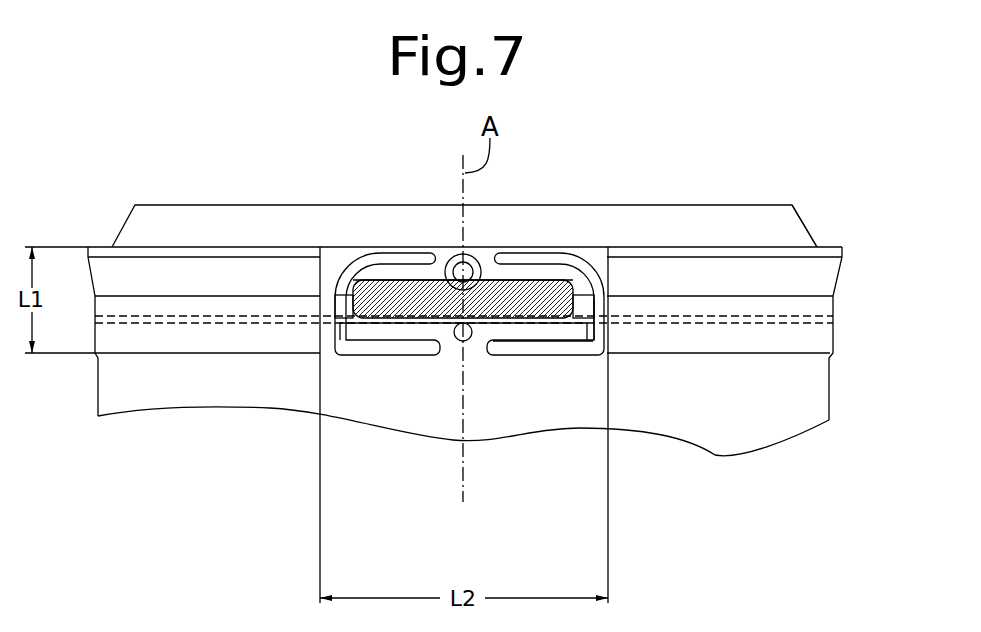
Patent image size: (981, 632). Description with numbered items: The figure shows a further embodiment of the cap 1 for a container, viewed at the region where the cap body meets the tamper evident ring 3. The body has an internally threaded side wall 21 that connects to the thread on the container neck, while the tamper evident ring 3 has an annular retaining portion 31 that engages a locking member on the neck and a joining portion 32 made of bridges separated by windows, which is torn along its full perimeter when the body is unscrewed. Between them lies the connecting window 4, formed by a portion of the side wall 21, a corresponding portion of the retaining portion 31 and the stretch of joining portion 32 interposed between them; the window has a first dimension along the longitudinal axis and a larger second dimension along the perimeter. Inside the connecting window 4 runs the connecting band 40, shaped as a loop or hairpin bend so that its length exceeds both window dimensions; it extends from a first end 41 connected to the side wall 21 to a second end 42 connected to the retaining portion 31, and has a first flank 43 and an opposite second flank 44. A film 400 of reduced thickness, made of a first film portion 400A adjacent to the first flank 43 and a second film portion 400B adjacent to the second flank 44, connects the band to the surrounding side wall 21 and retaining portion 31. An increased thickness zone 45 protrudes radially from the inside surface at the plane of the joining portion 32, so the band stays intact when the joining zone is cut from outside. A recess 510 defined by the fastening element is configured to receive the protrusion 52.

The cap 1 is at (866, 180).
The tamper evident ring 3 is at (860, 252).
The connecting window 4 is at (383, 228).
The side wall 21 is at (720, 434).
The retaining portion 31 is at (752, 222).
The joining portion 32 is at (785, 324).
The connecting band 40 is at (545, 278).
The first end 41 is at (487, 342).
The second end 42 is at (487, 255).
The first flank 43 is at (537, 345).
The second flank 44 is at (517, 280).
The increased thickness zone 45 is at (335, 310).
The protrusion 52 is at (458, 340).
The film 400 is at (562, 258).
The first film portion 400A is at (565, 352).
The second film portion 400B is at (553, 302).
The recess 510 is at (450, 262).